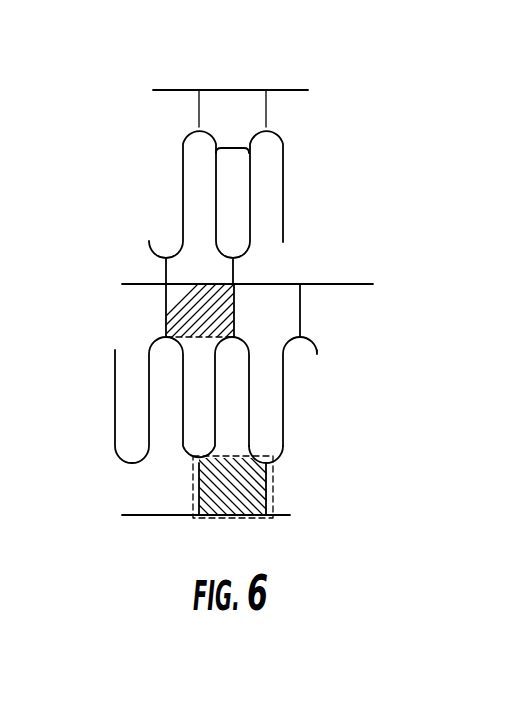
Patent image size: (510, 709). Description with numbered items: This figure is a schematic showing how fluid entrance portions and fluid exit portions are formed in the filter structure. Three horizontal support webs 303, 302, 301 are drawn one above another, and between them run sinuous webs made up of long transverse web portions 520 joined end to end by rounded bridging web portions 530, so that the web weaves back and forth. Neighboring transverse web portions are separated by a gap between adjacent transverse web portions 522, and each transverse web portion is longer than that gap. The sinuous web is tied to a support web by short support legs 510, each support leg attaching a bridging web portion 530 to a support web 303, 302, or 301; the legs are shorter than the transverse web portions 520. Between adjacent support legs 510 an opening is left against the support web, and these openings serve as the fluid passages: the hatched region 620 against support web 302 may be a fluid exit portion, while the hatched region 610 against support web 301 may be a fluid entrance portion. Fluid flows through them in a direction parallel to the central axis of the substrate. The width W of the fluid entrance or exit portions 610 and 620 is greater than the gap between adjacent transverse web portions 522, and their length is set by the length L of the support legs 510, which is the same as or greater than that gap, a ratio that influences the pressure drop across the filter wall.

The support web 301 is at (283, 516).
The support web 302 is at (360, 284).
The support web 303 is at (300, 88).
The support legs 510 is at (165, 310).
The transverse web portions 520 is at (283, 402).
The gap between adjacent transverse web portions 522 is at (232, 146).
The bridging web portions 530 is at (283, 455).
The fluid entrance portion 610 is at (295, 490).
The fluid exit portion 620 is at (257, 311).